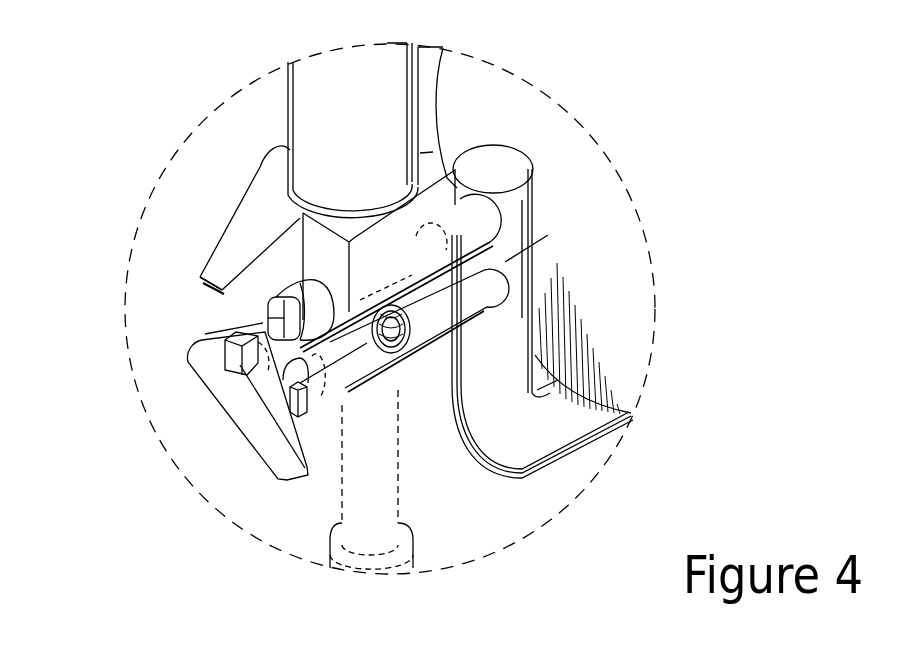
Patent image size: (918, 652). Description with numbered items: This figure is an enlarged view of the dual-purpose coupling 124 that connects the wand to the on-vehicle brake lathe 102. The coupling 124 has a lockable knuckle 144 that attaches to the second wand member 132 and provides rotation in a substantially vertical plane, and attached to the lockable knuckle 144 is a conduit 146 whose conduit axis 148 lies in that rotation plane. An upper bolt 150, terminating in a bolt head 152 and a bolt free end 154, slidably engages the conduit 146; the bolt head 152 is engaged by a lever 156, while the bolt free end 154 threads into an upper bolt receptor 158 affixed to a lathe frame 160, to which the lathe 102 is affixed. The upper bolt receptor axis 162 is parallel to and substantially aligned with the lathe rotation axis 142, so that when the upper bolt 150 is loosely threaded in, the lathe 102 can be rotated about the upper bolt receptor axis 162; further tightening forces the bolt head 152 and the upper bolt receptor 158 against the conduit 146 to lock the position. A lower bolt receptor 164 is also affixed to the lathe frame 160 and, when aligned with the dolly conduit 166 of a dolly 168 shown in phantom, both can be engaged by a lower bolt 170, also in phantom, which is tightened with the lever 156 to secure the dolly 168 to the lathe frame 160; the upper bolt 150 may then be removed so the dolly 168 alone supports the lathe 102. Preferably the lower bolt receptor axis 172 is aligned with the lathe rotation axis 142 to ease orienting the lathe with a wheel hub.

The on-vehicle brake lathe 102 is at (645, 352).
The coupling 124 is at (157, 344).
The second wand member 132 is at (285, 73).
The lathe rotation axis 142 is at (590, 214).
The lockable knuckle 144 is at (300, 217).
The conduit 146 is at (300, 247).
The conduit axis 148 is at (300, 290).
The upper bolt 150 is at (265, 309).
The bolt head 152 is at (305, 327).
The bolt free end 154 is at (450, 228).
The lever 156 is at (207, 383).
The upper bolt receptor 158 is at (458, 210).
The lathe frame 160 is at (555, 437).
The upper bolt receptor axis 162 is at (543, 177).
The lower bolt receptor 164 is at (473, 290).
The dolly conduit 166 is at (334, 397).
The dolly 168 is at (330, 542).
The lower bolt 170 is at (297, 418).
The lower bolt receptor axis 172 is at (364, 387).